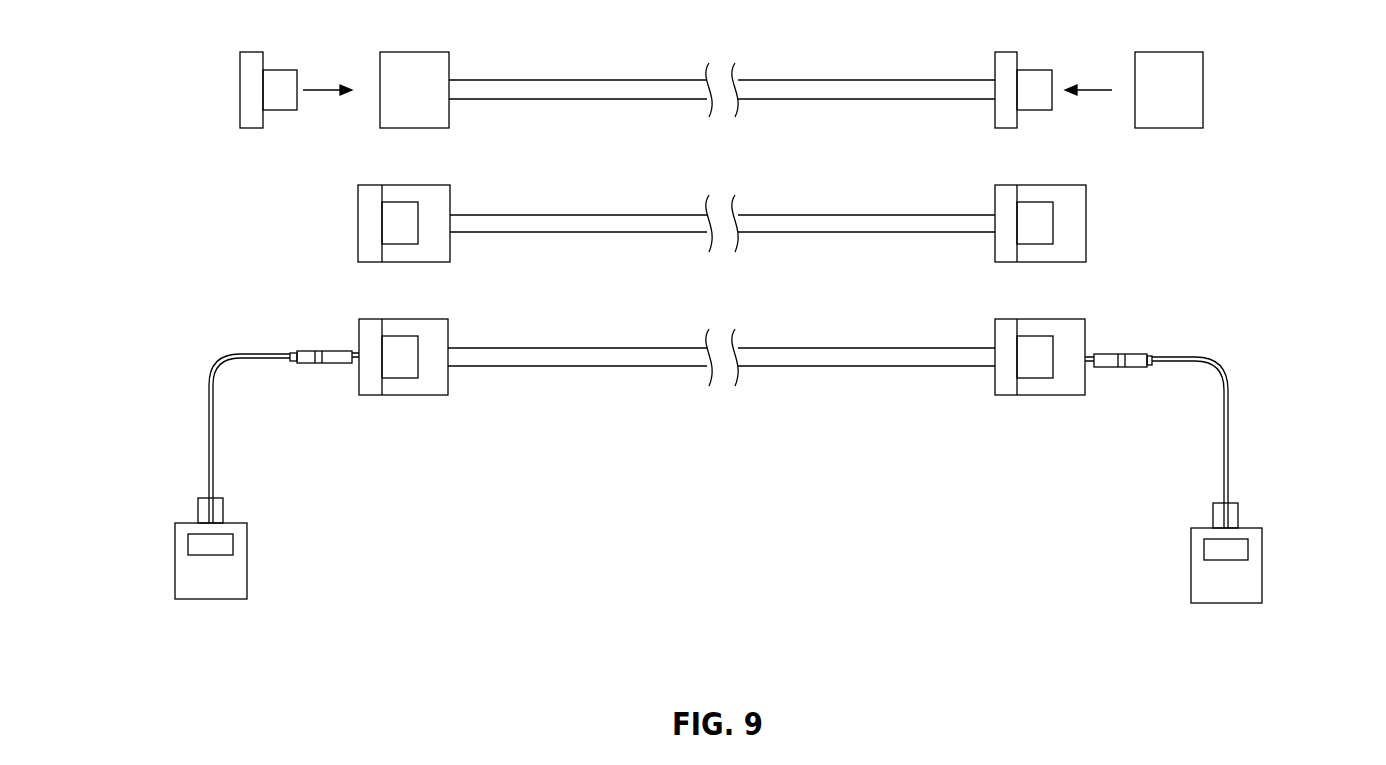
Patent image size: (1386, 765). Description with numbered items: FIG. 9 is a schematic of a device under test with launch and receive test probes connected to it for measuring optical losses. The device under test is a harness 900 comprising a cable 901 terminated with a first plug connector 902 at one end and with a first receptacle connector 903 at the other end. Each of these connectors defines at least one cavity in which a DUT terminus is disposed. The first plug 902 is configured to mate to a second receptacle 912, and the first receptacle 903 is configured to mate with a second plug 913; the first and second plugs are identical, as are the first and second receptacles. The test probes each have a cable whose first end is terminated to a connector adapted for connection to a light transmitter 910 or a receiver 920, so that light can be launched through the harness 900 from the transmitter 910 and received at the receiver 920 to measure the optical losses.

The harness 900 is at (880, 86).
The cable 901 is at (813, 92).
The first plug connector 902 is at (1040, 76).
The first receptacle connector 903 is at (380, 60).
The second receptacle 912 is at (1197, 90).
The second plug 913 is at (244, 84).
The light transmitter 910 is at (175, 568).
The receiver 920 is at (1262, 578).